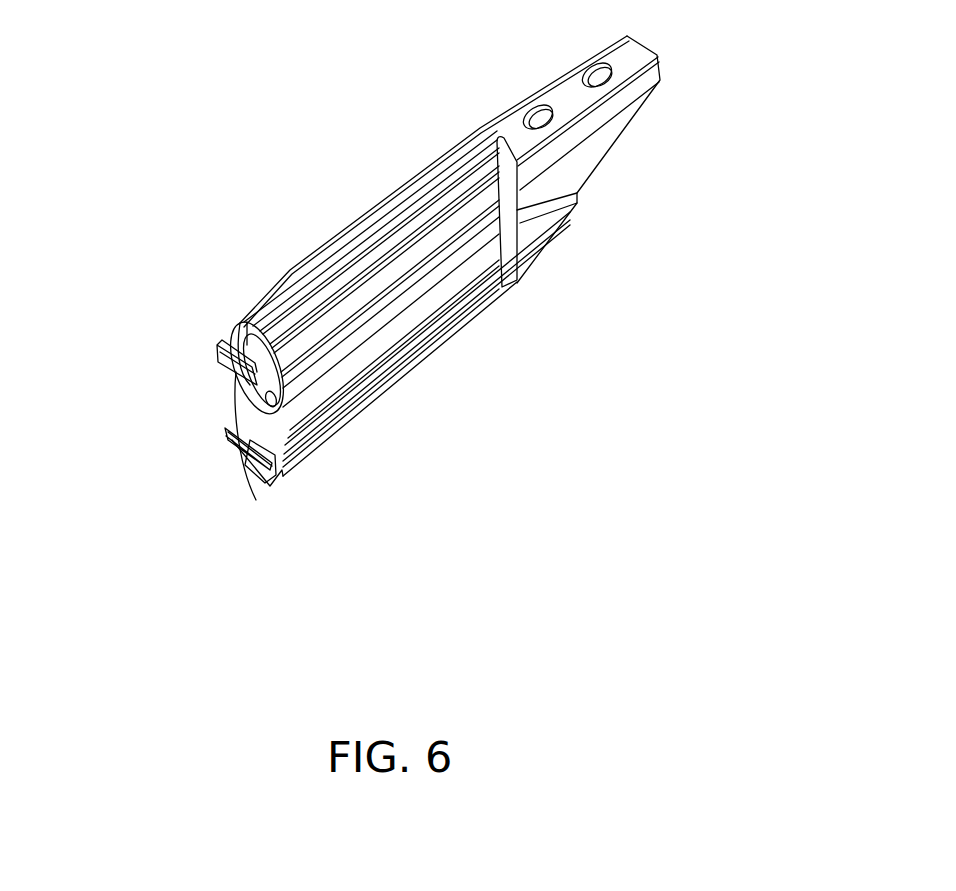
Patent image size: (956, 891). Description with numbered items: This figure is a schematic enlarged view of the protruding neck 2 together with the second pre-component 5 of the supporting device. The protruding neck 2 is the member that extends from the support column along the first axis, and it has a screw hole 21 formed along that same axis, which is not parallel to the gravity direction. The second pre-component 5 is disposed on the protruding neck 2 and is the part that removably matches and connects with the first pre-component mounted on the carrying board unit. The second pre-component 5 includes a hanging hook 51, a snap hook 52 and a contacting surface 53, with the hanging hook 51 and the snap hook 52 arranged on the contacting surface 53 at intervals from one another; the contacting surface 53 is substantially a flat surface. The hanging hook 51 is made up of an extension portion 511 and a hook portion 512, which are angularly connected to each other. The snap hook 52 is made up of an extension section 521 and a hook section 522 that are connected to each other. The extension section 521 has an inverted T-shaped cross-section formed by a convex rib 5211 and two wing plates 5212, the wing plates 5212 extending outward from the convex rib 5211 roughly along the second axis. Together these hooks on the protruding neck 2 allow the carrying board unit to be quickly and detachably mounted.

The protruding neck 2 is at (397, 216).
The screw hole 21 is at (272, 397).
The second pre-component 5 is at (327, 398).
The hanging hook 51 is at (190, 291).
The extension portion 511 is at (247, 321).
The hook portion 512 is at (217, 345).
The snap hook 52 is at (399, 510).
The extension section 521 is at (374, 481).
The convex rib 5211 is at (270, 486).
The wing plates 5212 is at (263, 434).
The hook section 522 is at (245, 440).
The contacting surface 53 is at (243, 416).